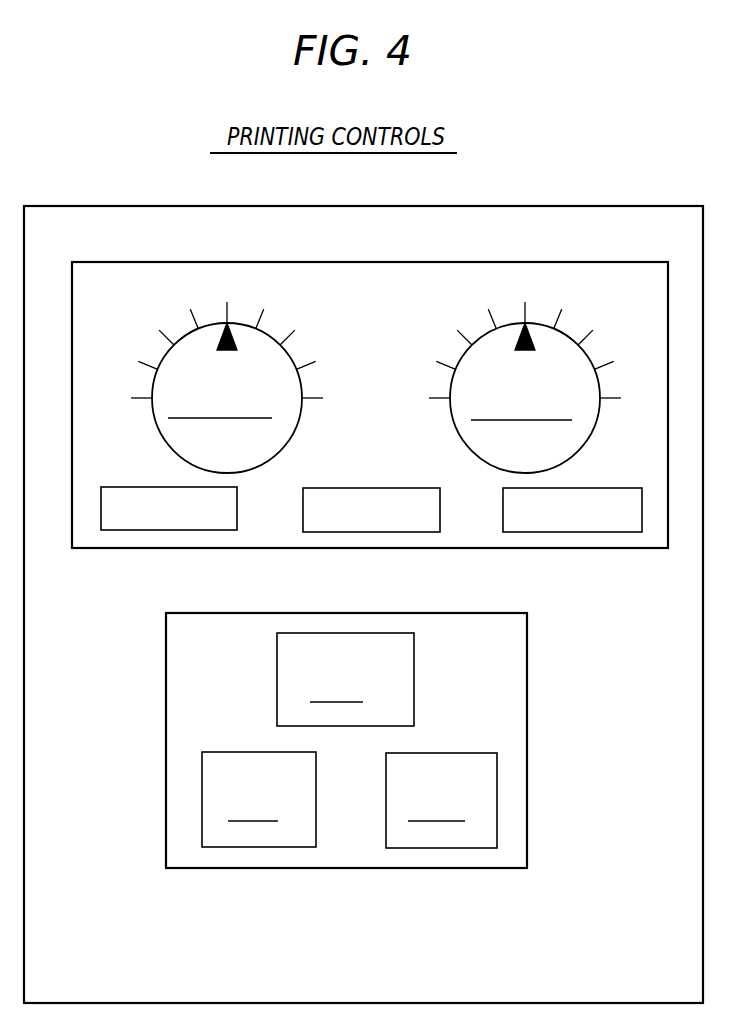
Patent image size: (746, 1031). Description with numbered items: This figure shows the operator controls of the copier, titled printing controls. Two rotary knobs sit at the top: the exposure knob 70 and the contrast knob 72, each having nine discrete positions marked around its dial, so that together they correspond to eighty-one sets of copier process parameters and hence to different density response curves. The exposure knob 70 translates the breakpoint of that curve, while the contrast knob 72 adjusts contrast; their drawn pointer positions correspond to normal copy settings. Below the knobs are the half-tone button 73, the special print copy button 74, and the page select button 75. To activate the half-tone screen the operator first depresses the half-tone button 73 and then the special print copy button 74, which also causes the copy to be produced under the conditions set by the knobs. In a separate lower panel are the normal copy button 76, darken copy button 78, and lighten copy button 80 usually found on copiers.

The exposure knob 70 is at (295, 428).
The contrast knob 72 is at (452, 424).
The half-tone button 73 is at (122, 487).
The special print copy button 74 is at (374, 488).
The page select button 75 is at (596, 488).
The normal copy button 76 is at (414, 688).
The darken copy button 78 is at (316, 792).
The lighten copy button 80 is at (386, 818).